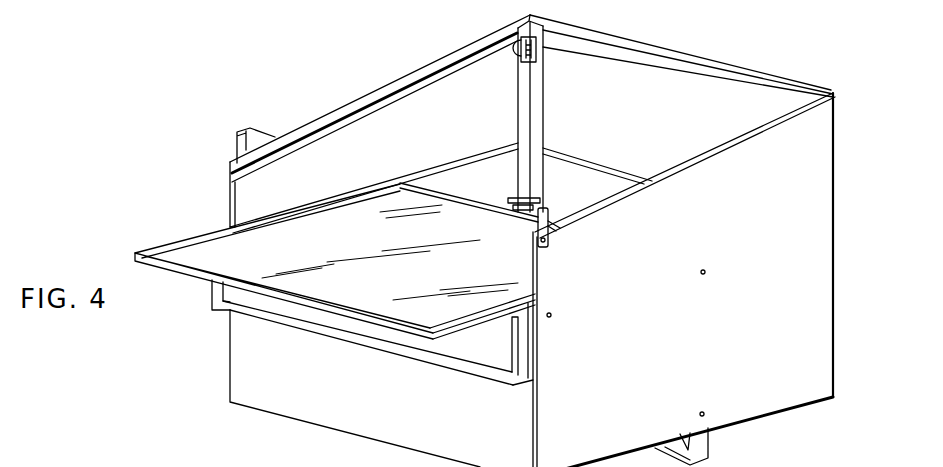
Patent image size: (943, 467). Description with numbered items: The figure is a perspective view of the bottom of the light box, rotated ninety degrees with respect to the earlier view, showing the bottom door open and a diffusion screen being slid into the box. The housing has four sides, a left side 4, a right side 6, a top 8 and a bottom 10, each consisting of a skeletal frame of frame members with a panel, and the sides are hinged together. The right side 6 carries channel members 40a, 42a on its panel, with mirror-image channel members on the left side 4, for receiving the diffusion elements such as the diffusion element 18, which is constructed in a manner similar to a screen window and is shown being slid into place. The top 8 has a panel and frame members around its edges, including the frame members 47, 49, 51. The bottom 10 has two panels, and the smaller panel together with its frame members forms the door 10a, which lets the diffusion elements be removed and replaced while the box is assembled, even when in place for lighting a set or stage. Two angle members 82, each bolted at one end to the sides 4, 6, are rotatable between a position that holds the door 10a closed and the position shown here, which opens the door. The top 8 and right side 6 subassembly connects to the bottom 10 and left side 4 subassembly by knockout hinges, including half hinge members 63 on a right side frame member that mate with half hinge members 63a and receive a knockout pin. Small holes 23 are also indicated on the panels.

The left side 4 is at (728, 423).
The right side 6 is at (531, 106).
The top 8 is at (670, 51).
The bottom 10 is at (230, 365).
The door 10a is at (430, 363).
The diffusion element 18 is at (186, 273).
The fastener holes 23 is at (550, 318).
The channel member 40a is at (392, 104).
The channel member 42a is at (466, 156).
The frame member 47 is at (678, 73).
The frame member 49 is at (545, 96).
The frame member 51 is at (596, 162).
The half hinge member 63 is at (529, 16).
The half hinge member 63a is at (541, 45).
The angle member 82 is at (252, 132).